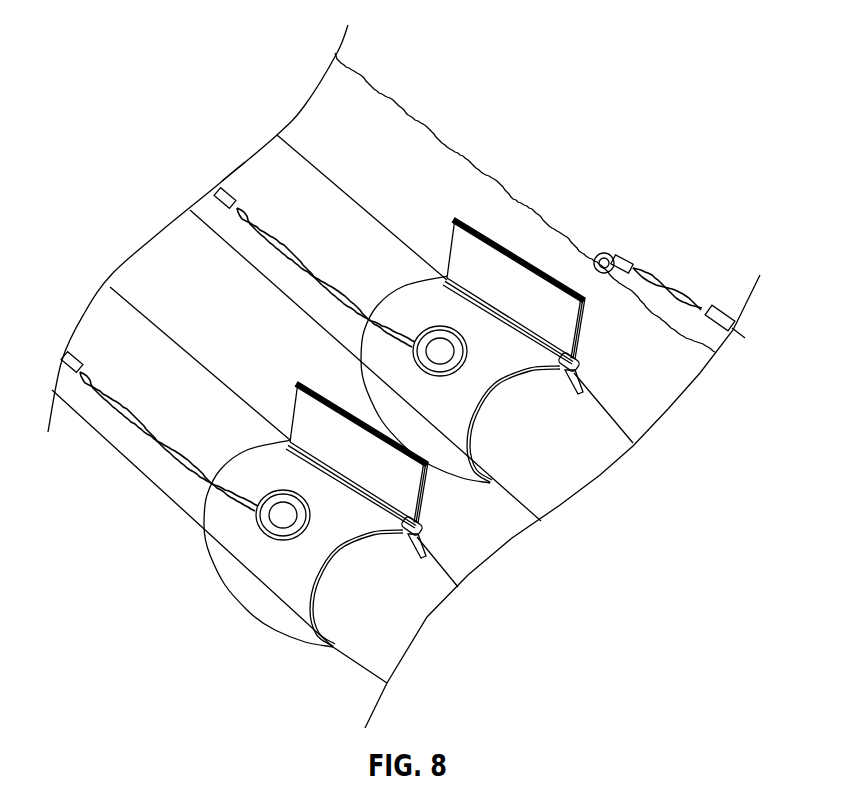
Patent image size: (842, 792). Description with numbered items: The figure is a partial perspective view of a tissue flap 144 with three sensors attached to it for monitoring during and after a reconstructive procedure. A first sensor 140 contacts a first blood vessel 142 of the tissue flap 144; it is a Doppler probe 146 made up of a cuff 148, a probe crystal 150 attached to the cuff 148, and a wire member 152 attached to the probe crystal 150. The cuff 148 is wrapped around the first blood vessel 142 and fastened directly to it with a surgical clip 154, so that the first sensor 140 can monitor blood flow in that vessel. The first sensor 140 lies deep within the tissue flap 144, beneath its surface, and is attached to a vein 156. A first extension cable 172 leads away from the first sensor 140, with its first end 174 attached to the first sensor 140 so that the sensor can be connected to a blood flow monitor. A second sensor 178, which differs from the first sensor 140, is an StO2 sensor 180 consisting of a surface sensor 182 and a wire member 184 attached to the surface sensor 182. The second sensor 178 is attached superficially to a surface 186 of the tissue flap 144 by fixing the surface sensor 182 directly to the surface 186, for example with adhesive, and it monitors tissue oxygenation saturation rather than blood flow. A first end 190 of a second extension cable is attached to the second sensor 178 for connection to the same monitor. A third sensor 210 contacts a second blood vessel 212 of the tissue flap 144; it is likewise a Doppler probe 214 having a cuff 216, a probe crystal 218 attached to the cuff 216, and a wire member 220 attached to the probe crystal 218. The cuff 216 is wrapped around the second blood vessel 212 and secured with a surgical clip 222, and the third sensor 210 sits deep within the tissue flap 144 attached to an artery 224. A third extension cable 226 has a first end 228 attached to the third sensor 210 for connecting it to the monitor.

The first sensor 140 is at (272, 401).
The first blood vessel 142 is at (158, 309).
The tissue flap 144 is at (538, 209).
The Doppler probe 146 is at (433, 491).
The cuff 148 is at (330, 553).
The probe crystal 150 is at (288, 515).
The wire member 152 is at (124, 397).
The surgical clip 154 is at (427, 528).
The vein 156 is at (393, 636).
The first extension cable 172 is at (78, 349).
The first end 174 is at (112, 272).
The second sensor 178 is at (695, 242).
The StO2 sensor 180 is at (652, 229).
The surface sensor 182 is at (605, 246).
The wire member 184 is at (700, 282).
The surface 186 is at (705, 344).
The first end 190 is at (722, 321).
The third sensor 210 is at (482, 198).
The second blood vessel 212 is at (418, 246).
The Doppler probe 214 is at (588, 328).
The cuff 216 is at (482, 390).
The probe crystal 218 is at (438, 352).
The wire member 220 is at (284, 236).
The surgical clip 222 is at (585, 360).
The artery 224 is at (370, 236).
The third extension cable 226 is at (218, 203).
The first end 228 is at (234, 187).